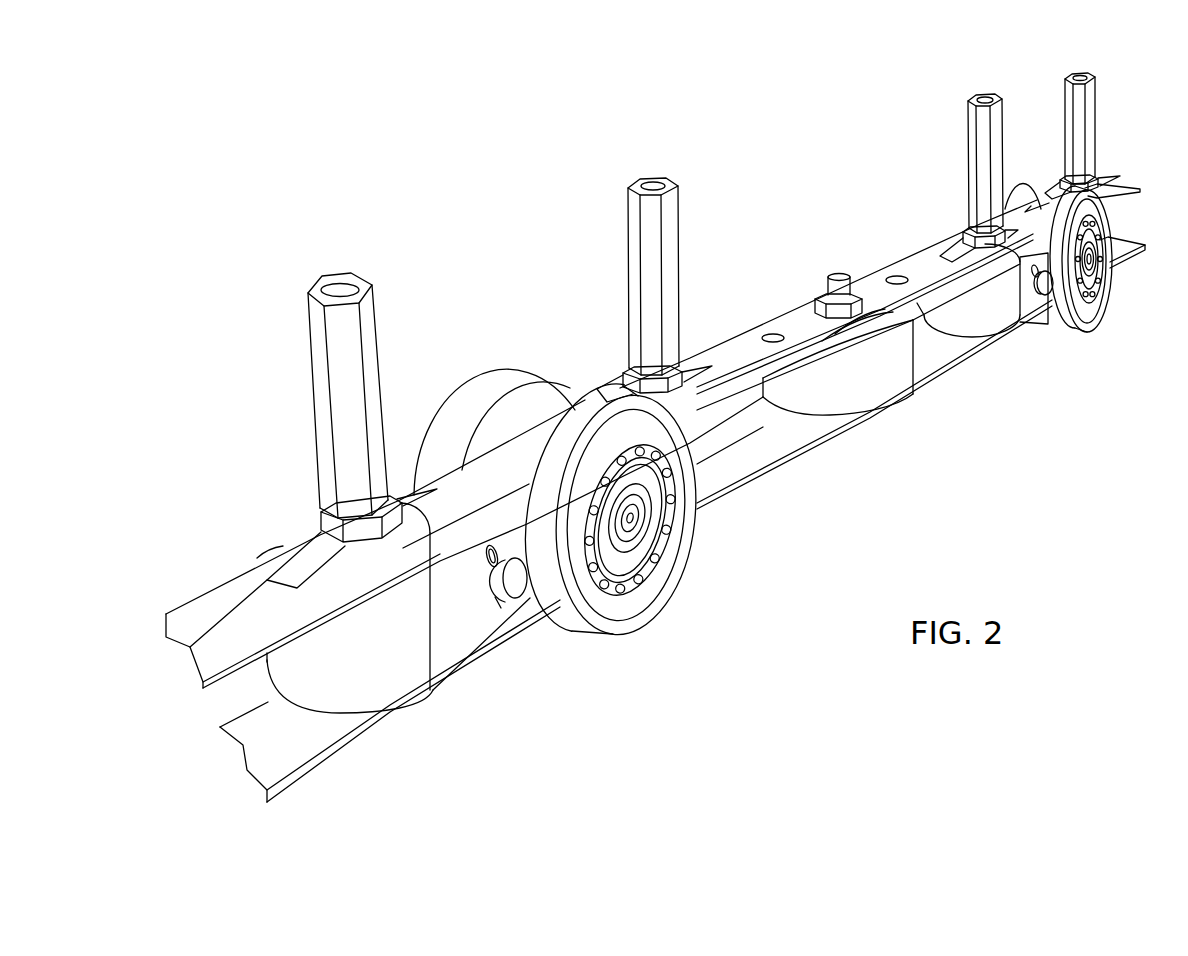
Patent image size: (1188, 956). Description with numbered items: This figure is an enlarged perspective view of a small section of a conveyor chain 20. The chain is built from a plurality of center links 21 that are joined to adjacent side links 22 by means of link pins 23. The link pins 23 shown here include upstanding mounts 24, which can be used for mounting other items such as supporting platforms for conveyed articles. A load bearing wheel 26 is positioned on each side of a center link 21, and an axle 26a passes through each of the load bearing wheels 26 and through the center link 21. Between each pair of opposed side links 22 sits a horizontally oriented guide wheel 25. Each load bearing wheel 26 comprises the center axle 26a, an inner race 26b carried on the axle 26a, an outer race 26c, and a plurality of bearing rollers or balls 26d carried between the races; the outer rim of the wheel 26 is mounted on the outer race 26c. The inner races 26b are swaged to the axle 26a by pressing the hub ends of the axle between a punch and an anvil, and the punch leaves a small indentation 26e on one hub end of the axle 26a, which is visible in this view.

The chain 20 is at (900, 154).
The center link 21 is at (410, 680).
The side link 22 is at (227, 592).
The link pin 23 is at (398, 500).
The upstanding mount 24 is at (368, 313).
The guide wheel 25 is at (870, 388).
The load bearing wheel 26 is at (763, 447).
The center axle 26a is at (637, 502).
The inner race 26b is at (609, 567).
The outer race 26c is at (620, 440).
The bearing rollers or balls 26d is at (650, 460).
The indentation 26e is at (637, 537).